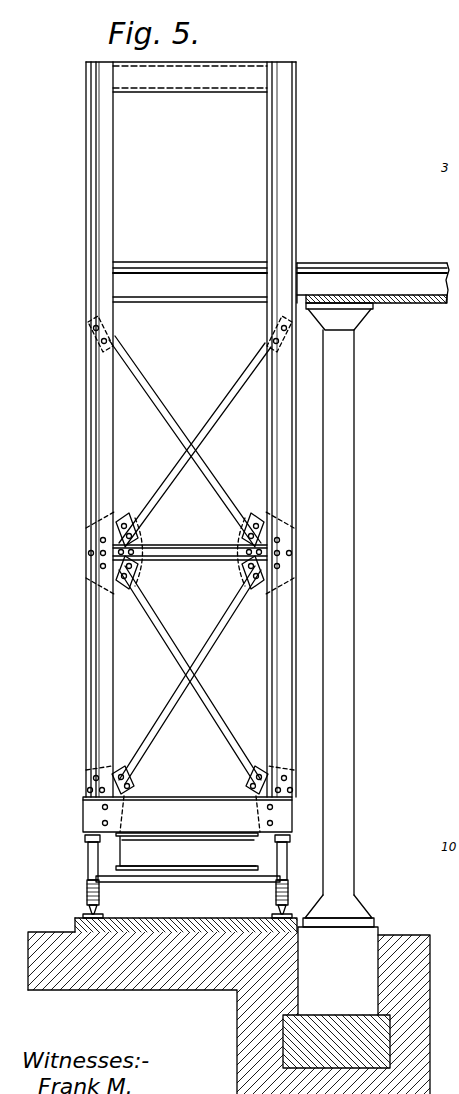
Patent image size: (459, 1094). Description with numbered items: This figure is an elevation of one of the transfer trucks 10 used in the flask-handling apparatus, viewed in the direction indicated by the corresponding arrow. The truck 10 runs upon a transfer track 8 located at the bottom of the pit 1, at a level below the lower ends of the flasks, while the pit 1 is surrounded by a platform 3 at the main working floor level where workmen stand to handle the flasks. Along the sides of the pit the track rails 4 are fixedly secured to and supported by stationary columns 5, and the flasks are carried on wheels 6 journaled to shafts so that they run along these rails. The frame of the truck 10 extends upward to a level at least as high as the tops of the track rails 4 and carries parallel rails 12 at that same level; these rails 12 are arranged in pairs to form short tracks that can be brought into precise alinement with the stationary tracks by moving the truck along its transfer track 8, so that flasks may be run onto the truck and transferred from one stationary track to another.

The pit 1 is at (192, 472).
The platform 3 is at (360, 296).
The track rails 4 is at (366, 265).
The stationary columns 5 is at (332, 632).
The wheels 6 is at (328, 173).
The transfer track 8 is at (98, 916).
The truck 10 is at (82, 429).
The parallel rails 12 is at (190, 282).